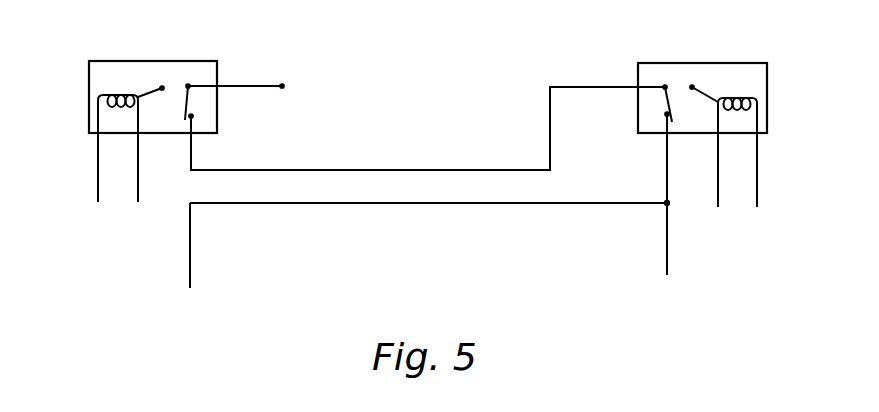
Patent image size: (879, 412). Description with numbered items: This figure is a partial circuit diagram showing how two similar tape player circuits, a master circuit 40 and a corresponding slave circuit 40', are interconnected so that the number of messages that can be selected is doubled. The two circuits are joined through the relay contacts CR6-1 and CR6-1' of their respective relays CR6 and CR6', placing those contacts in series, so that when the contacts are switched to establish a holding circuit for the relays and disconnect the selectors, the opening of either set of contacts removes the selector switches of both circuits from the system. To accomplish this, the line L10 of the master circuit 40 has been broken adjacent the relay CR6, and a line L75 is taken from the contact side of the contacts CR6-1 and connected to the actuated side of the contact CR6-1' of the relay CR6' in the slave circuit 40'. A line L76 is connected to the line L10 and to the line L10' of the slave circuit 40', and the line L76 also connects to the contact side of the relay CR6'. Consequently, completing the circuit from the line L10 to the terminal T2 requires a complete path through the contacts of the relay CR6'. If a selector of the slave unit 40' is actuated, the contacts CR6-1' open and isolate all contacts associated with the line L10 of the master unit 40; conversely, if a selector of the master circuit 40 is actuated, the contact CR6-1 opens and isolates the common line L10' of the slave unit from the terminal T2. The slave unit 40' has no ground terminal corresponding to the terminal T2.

The relay CR6 is at (153, 82).
The relay contacts CR6-1 is at (240, 106).
The terminal T2 is at (254, 89).
The line L75 is at (438, 168).
The line L76 is at (438, 204).
The line L10 is at (158, 250).
The circuit 40 is at (93, 188).
The relay CR6' is at (703, 78).
The relay contacts CR6-1' is at (619, 109).
The line L10' is at (703, 197).
The circuit 40' is at (773, 201).